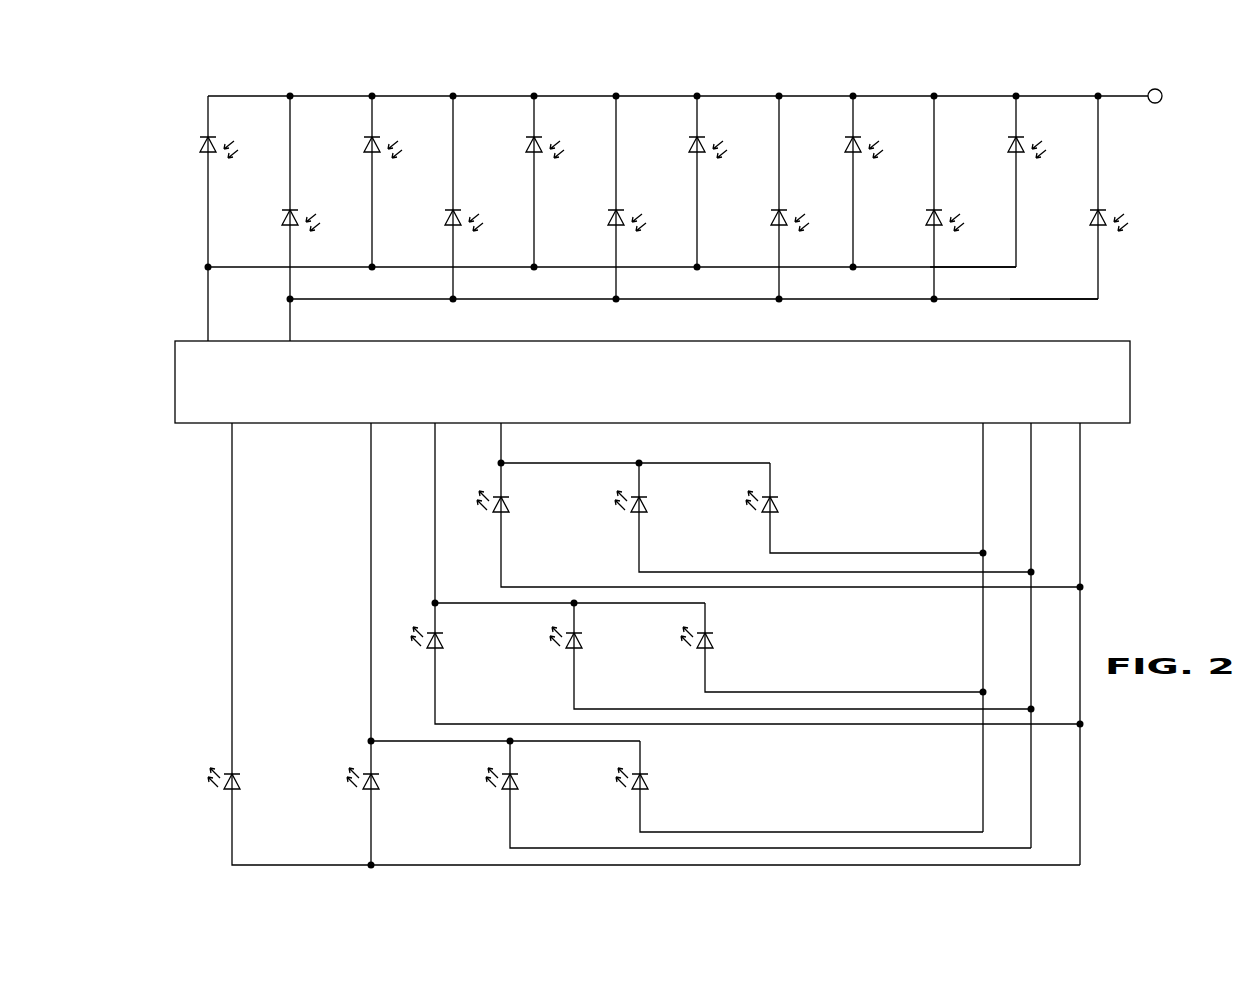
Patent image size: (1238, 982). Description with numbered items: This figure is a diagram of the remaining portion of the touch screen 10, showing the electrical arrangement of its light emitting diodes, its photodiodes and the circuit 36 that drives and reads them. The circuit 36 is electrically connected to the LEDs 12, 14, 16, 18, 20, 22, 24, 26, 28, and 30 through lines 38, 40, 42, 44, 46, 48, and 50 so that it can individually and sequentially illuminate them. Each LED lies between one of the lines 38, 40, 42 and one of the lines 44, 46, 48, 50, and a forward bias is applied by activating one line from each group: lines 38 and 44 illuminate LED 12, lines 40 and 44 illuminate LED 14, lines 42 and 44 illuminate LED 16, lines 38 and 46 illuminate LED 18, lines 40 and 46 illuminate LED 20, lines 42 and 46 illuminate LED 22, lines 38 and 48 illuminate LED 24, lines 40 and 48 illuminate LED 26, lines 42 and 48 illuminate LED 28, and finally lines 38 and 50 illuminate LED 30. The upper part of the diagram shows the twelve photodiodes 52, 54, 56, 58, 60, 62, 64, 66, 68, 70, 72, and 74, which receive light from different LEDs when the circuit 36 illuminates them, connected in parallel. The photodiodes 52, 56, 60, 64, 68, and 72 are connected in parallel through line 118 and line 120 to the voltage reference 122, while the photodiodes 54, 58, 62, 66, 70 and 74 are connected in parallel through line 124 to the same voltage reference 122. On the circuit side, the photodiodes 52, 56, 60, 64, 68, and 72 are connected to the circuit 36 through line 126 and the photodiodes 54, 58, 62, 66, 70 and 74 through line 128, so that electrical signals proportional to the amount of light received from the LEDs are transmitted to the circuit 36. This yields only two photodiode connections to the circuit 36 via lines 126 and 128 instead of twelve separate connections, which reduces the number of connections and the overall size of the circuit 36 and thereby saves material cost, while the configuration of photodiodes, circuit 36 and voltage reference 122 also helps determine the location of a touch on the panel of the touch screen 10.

The touch screen 10 is at (108, 125).
The light emitting diode 12 is at (510, 505).
The light emitting diode 14 is at (648, 505).
The light emitting diode 16 is at (779, 505).
The light emitting diode 18 is at (444, 641).
The light emitting diode 20 is at (583, 641).
The light emitting diode 22 is at (714, 641).
The light emitting diode 24 is at (380, 782).
The light emitting diode 26 is at (519, 782).
The light emitting diode 28 is at (649, 782).
The light emitting diode 30 is at (241, 782).
The circuit 36 is at (667, 393).
The line 38 is at (1083, 444).
The line 40 is at (1031, 437).
The line 42 is at (981, 444).
The line 44 is at (504, 442).
The line 46 is at (436, 436).
The line 48 is at (369, 444).
The line 50 is at (230, 444).
The photodiode 52 is at (200, 143).
The photodiode 54 is at (282, 218).
The photodiode 56 is at (364, 143).
The photodiode 58 is at (445, 218).
The photodiode 60 is at (526, 143).
The photodiode 62 is at (608, 218).
The photodiode 64 is at (689, 143).
The photodiode 66 is at (771, 218).
The photodiode 68 is at (845, 143).
The photodiode 70 is at (926, 218).
The photodiode 72 is at (1008, 143).
The photodiode 74 is at (1090, 218).
The line 118 is at (985, 268).
The line 120 is at (215, 96).
The voltage reference 122 is at (1163, 96).
The line 124 is at (1065, 300).
The line 126 is at (207, 298).
The line 128 is at (294, 322).